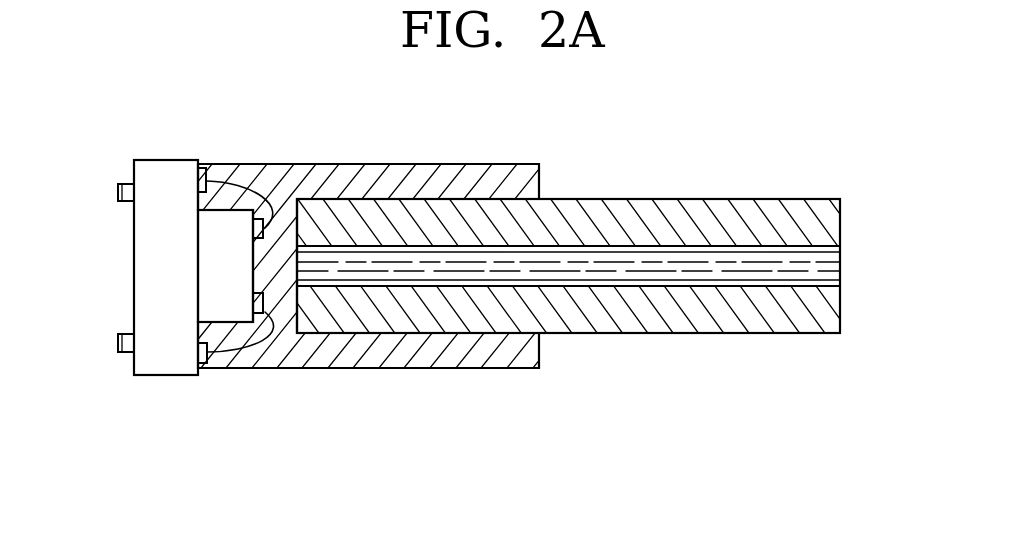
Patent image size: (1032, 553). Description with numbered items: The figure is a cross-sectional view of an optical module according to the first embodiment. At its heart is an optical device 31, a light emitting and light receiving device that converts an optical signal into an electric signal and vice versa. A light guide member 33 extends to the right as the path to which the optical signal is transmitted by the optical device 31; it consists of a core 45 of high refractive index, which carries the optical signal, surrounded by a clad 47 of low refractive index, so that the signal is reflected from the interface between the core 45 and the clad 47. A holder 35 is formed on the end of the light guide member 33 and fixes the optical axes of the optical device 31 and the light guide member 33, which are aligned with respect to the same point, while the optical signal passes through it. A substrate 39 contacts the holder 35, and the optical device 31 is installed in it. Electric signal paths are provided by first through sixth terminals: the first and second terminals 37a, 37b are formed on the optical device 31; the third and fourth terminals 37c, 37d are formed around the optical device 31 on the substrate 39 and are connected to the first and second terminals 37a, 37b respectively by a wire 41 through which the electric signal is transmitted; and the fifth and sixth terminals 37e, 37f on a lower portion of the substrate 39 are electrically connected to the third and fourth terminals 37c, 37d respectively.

The optical device 31 is at (215, 275).
The light guide member 33 is at (746, 182).
The holder 35 is at (386, 369).
The first terminal 37a is at (278, 338).
The second terminal 37b is at (257, 218).
The third terminal 37c is at (200, 369).
The fourth terminal 37d is at (205, 167).
The fifth terminal 37e is at (118, 343).
The sixth terminal 37f is at (118, 192).
The substrate 39 is at (155, 376).
The wire 41 is at (243, 369).
The core 45 is at (842, 268).
The clad 47 is at (843, 223).